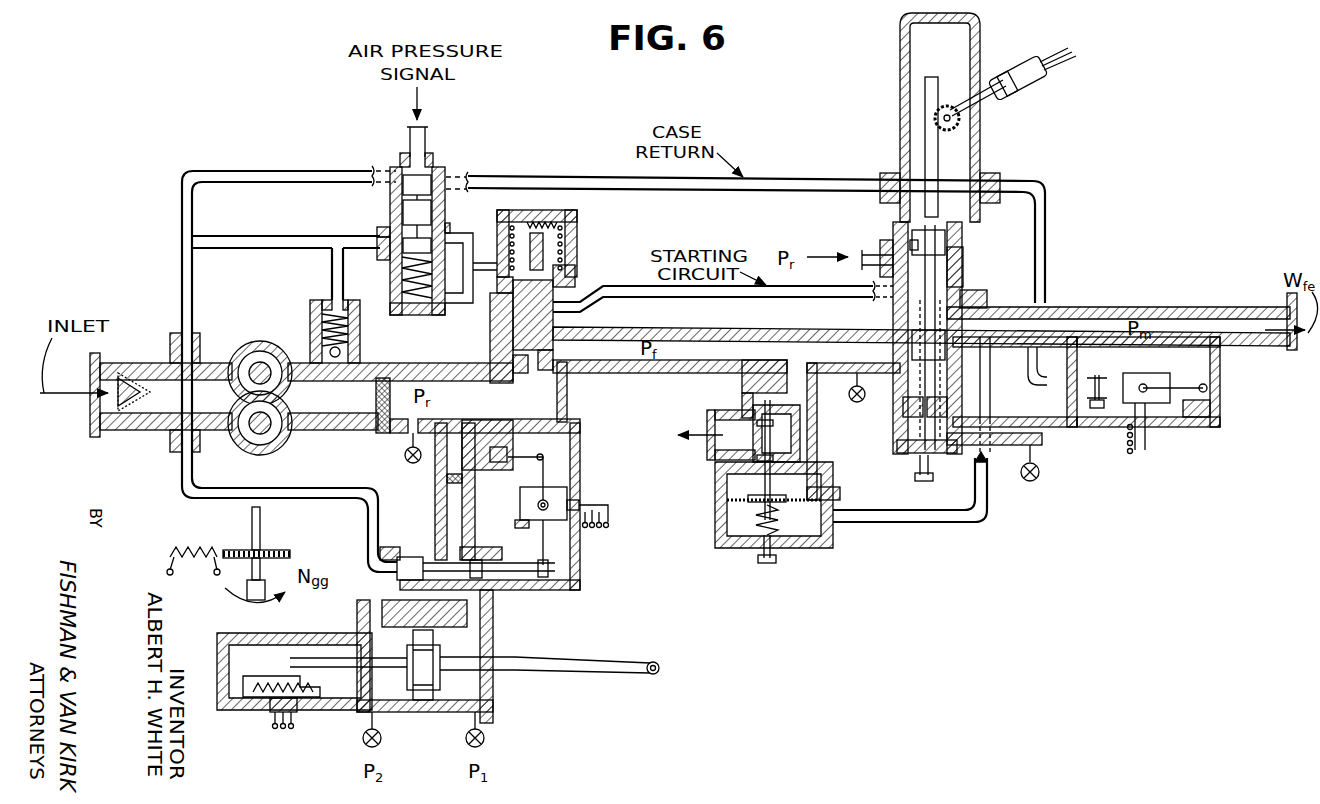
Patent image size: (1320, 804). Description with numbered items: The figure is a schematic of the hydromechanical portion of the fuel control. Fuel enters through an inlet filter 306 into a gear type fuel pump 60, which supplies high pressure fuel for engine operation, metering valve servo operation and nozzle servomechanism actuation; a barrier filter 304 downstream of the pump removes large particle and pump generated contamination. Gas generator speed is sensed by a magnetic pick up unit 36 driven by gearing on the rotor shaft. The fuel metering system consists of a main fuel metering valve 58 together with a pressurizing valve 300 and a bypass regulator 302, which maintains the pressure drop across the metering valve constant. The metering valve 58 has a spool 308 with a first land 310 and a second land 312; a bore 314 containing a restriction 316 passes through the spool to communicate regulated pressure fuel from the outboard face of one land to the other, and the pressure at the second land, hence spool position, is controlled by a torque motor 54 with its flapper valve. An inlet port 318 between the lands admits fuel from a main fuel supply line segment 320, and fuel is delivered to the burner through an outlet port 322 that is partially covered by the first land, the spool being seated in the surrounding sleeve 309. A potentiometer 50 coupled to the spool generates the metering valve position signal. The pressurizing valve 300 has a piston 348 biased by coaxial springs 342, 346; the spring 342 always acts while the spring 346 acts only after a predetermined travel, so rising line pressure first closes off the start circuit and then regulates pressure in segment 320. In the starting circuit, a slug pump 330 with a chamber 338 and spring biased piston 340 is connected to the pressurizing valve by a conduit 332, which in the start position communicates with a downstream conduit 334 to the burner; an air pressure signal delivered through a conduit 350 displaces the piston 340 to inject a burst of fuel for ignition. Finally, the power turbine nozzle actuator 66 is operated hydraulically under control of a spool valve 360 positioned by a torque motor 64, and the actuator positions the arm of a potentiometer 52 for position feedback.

The conduit 350 is at (428, 143).
The slug pump 330 is at (380, 210).
The spring biased piston 340 is at (420, 222).
The chamber 338 is at (400, 275).
The conduit 332 is at (485, 300).
The spring 346 is at (540, 220).
The spring 342 is at (575, 222).
The pressurizing valve 300 is at (582, 240).
The downstream conduit 334 is at (612, 292).
The piston 348 is at (560, 320).
The barrier filter 304 is at (372, 400).
The inlet filter 306 is at (148, 362).
The gear type fuel pump 60 is at (235, 393).
The magnetic pick up unit 36 is at (222, 578).
The potentiometer 52 is at (340, 690).
The spool valve 360 is at (488, 582).
The torque motor 64 is at (560, 496).
The power turbine nozzle actuator 66 is at (580, 670).
The bypass regulator 302 is at (722, 533).
The bore 314 is at (898, 250).
The main fuel metering valve 58 is at (970, 258).
The valve sleeve 309 is at (965, 285).
The first land 310 is at (905, 307).
The main fuel supply line segment 320 is at (722, 336).
The outlet port 322 is at (960, 326).
The inlet port 318 is at (898, 352).
The spool 308 is at (940, 370).
The second land 312 is at (910, 400).
The restriction 316 is at (920, 418).
The torque motor 54 is at (1155, 378).
The metering valve position sensor potentiometer 50 is at (1030, 96).